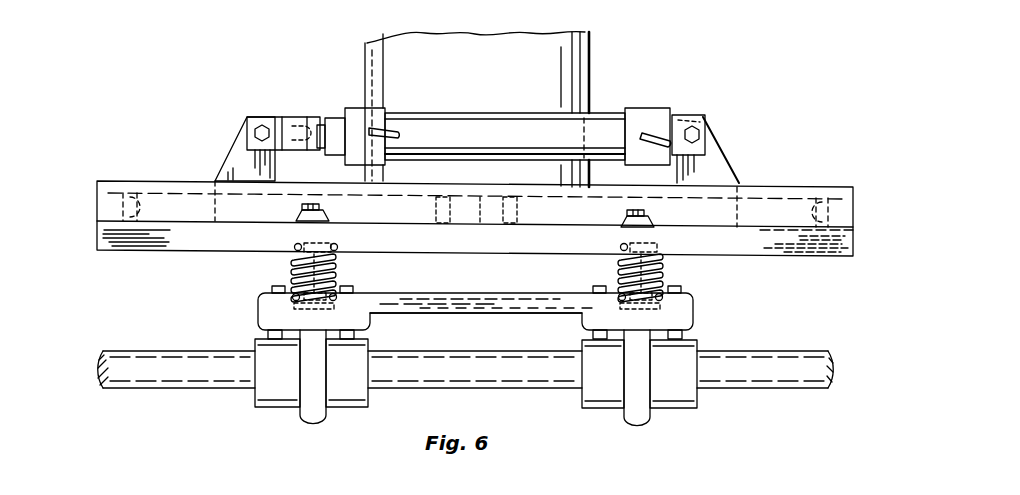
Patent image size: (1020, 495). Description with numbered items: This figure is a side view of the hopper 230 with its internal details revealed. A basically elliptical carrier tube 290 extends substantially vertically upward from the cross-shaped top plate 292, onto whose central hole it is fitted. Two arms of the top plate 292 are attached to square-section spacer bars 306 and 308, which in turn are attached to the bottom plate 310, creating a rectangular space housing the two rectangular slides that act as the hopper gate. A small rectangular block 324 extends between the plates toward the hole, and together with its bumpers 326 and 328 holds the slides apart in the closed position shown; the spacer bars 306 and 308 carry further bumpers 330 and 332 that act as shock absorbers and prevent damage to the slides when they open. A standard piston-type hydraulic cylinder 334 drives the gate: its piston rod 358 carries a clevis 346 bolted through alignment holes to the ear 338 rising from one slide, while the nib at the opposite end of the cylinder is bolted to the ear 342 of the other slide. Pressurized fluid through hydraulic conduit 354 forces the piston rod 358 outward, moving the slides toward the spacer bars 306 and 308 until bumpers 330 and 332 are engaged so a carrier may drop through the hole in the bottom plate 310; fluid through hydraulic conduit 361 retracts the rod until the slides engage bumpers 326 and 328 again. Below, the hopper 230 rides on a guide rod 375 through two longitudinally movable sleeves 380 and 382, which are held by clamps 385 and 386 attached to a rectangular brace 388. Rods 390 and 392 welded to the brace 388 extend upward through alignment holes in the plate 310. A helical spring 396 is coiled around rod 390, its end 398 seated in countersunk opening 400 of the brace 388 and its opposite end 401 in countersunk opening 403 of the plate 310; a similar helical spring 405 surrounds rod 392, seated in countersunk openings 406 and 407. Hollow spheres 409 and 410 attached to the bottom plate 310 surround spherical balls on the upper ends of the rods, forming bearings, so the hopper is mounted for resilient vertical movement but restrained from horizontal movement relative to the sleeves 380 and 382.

The hopper 230 is at (690, 73).
The carrier tube 290 is at (572, 64).
The top plate 292 is at (707, 152).
The spacer bar 306 is at (108, 207).
The spacer bar 308 is at (845, 213).
The bottom plate 310 is at (798, 238).
The rectangular block 324 is at (482, 210).
The bumper 326 is at (451, 205).
The bumper 328 is at (511, 208).
The bumper 330 is at (135, 186).
The bumper 332 is at (818, 205).
The cylinder 334 is at (432, 125).
The ear 338 is at (239, 150).
The ear 342 is at (662, 194).
The clevis 346 is at (280, 128).
The hydraulic conduit 354 is at (645, 130).
The piston rod 358 is at (318, 122).
The hydraulic conduit 361 is at (383, 110).
The guide rod 375 is at (806, 365).
The sleeve 380 is at (343, 378).
The sleeve 382 is at (602, 388).
The clamp 385 is at (272, 385).
The clamp 386 is at (652, 387).
The rectangular brace 388 is at (448, 305).
The rod 390 is at (293, 258).
The rod 392 is at (657, 272).
The helical spring 396 is at (338, 263).
The end of spring 398 is at (293, 297).
The countersunk opening 400 is at (337, 296).
The end of spring 401 is at (296, 248).
The countersunk opening 403 is at (338, 248).
The helical spring 405 is at (660, 252).
The countersunk opening 406 is at (662, 297).
The countersunk opening 407 is at (622, 248).
The hollow sphere 409 is at (300, 213).
The hollow sphere 410 is at (628, 218).